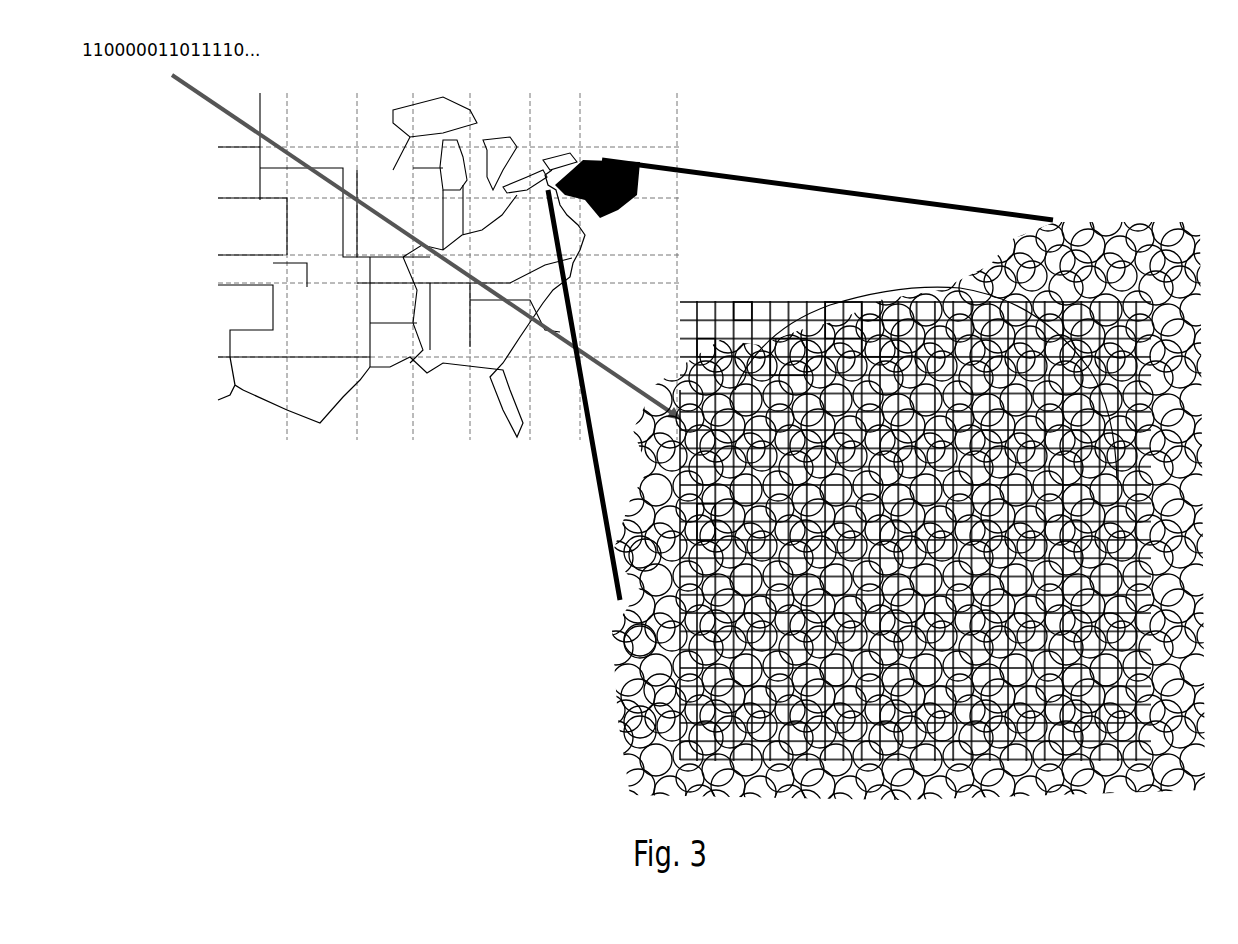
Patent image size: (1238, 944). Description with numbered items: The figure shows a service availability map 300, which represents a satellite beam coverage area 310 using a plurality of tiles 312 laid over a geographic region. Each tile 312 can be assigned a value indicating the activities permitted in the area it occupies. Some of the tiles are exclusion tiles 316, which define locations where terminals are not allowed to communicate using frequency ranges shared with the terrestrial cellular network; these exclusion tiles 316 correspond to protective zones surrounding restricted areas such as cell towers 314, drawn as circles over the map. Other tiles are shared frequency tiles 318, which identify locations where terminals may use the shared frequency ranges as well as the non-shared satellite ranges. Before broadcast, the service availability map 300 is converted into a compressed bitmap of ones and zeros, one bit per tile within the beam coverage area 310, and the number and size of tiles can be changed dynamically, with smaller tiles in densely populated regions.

The service availability map 300 is at (1002, 160).
The beam coverage area 310 is at (742, 376).
The tiles 312 is at (743, 313).
The cell towers 314 is at (647, 682).
The exclusion tiles 316 is at (817, 343).
The shared frequency tiles 318 is at (857, 312).